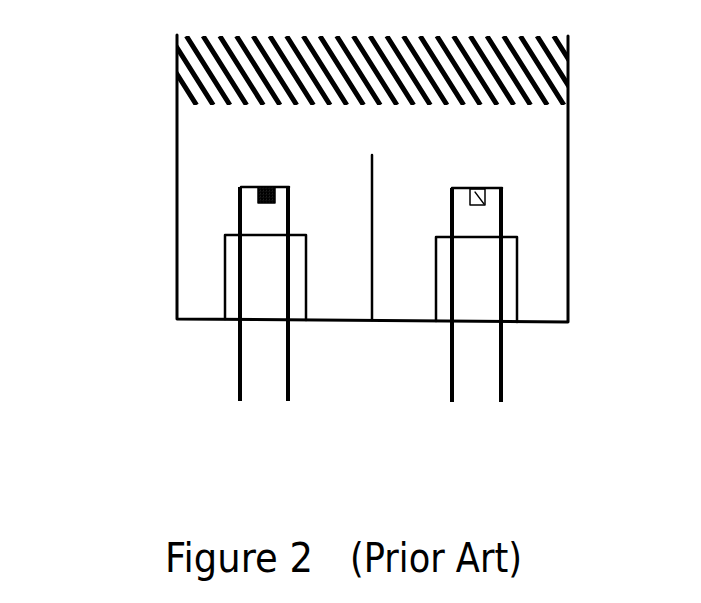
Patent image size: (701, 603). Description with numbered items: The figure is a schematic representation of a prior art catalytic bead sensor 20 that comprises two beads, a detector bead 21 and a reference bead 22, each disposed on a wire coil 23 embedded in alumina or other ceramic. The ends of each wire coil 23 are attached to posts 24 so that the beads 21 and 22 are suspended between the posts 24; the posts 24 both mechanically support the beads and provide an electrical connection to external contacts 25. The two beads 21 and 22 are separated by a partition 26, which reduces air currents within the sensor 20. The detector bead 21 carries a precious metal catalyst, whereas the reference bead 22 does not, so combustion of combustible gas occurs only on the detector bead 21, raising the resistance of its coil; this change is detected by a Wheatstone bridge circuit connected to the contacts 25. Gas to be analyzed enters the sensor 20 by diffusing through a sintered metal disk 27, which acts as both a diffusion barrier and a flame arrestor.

The catalytic bead sensor 20 is at (568, 83).
The detector bead 21 is at (258, 188).
The reference bead 22 is at (484, 204).
The wire coil 23 is at (496, 188).
The posts 24 is at (241, 188).
The external contacts 25 is at (239, 402).
The partition 26 is at (372, 220).
The sintered metal disk 27 is at (177, 68).